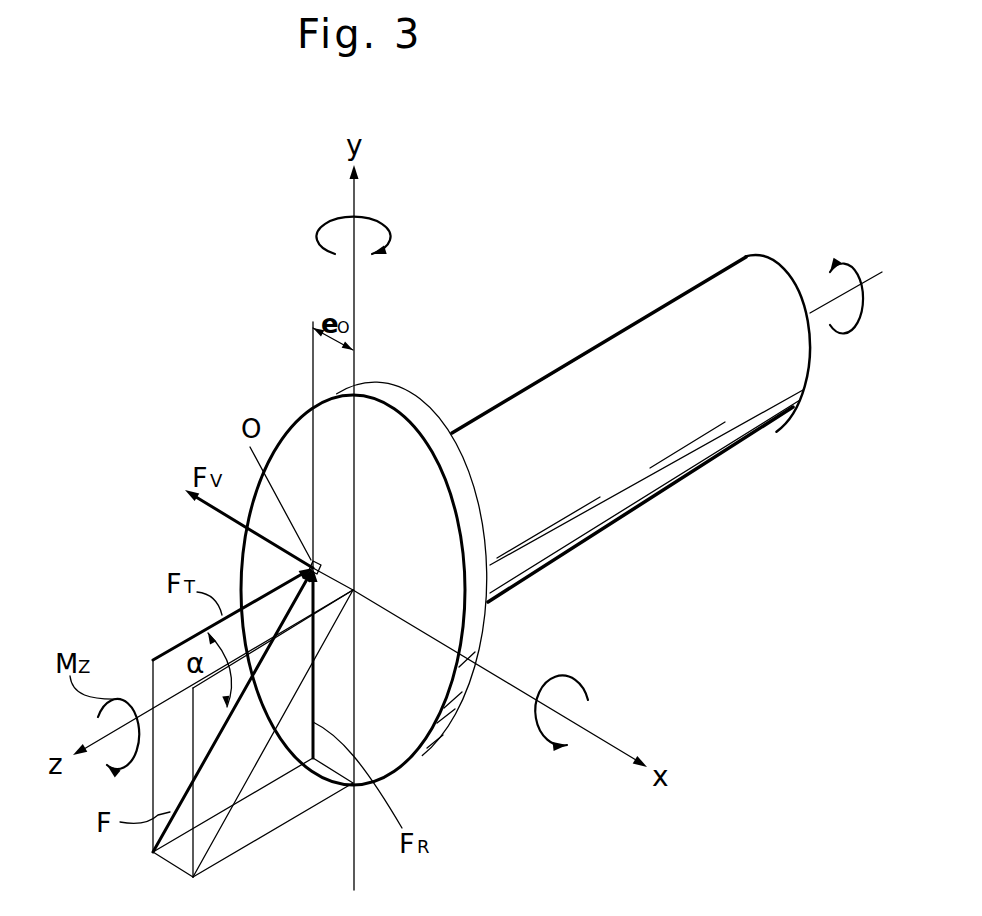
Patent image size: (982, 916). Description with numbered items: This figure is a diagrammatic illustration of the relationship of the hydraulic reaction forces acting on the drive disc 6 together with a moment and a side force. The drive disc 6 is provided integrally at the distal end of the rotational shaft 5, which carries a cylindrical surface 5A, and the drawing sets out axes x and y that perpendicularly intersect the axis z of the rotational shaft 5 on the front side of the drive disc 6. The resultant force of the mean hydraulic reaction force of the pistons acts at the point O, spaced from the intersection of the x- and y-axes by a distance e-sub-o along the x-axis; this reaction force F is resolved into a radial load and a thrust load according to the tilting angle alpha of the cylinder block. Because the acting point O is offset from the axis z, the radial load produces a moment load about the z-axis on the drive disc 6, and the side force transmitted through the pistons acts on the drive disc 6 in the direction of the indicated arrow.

The rotational shaft 5 is at (655, 508).
The cylindrical surface of shaft 5A is at (564, 390).
The drive disc 6 is at (402, 718).